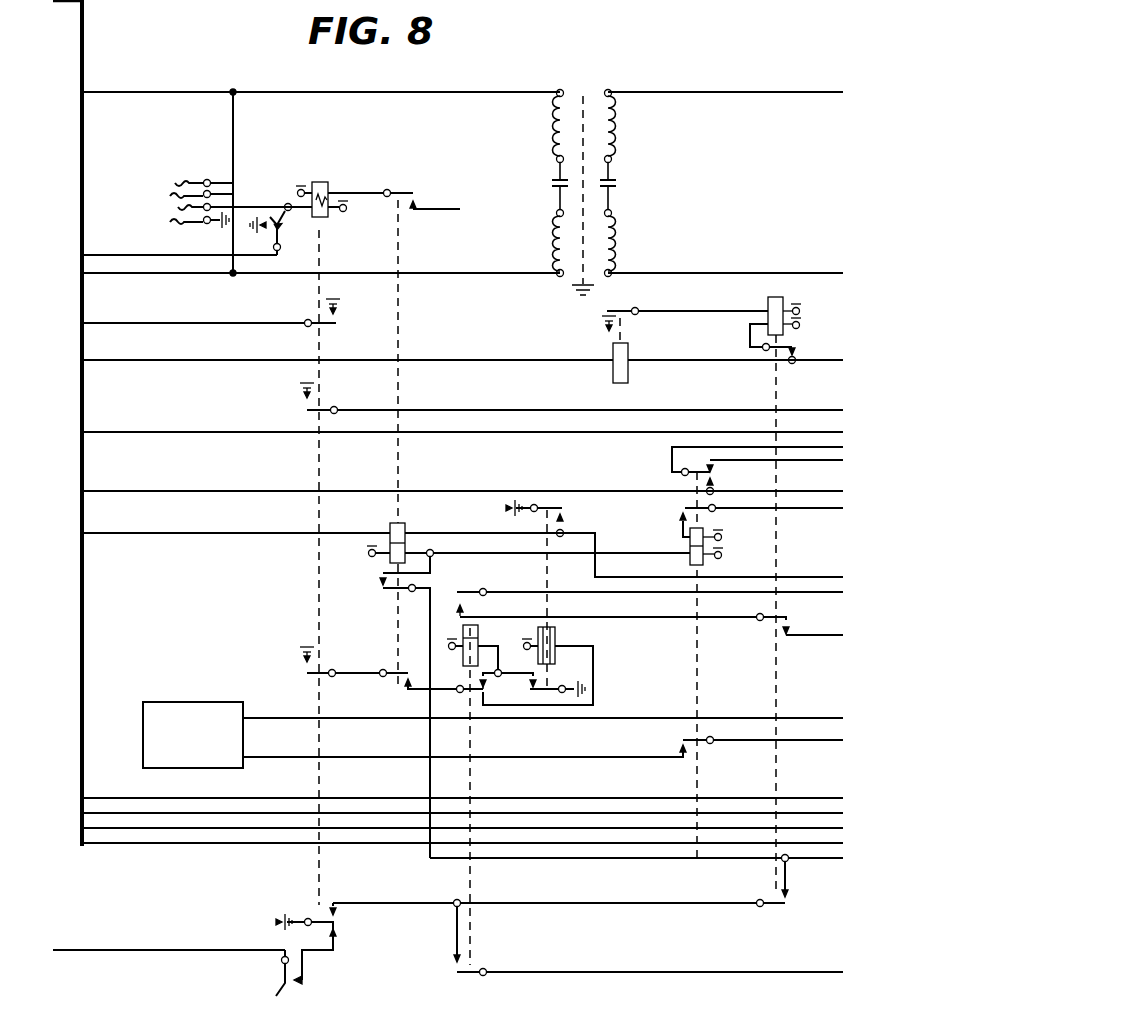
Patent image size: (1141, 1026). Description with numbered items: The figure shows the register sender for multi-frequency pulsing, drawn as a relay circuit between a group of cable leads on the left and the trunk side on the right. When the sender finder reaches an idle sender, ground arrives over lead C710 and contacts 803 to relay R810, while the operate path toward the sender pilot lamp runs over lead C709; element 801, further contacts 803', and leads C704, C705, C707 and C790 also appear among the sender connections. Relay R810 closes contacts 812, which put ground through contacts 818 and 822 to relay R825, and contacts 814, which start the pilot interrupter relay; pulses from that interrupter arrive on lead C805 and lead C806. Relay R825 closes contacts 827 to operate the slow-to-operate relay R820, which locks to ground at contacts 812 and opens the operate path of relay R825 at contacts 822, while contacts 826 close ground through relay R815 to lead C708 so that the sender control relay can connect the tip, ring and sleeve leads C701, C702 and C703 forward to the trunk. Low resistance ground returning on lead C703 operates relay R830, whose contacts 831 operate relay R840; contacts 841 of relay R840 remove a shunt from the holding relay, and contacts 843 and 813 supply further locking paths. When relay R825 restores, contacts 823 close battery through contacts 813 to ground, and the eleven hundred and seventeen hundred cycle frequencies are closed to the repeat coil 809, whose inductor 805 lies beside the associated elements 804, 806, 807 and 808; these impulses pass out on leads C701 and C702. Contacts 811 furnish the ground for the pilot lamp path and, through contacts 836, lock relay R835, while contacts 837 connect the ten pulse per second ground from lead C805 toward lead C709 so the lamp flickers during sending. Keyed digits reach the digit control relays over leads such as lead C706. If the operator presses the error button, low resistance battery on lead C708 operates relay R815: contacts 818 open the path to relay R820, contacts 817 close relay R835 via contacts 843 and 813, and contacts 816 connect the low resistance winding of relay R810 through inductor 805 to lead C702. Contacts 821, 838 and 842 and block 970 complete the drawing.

The line switch 801 is at (197, 172).
The contacts 803 is at (285, 230).
The relay contact 803' is at (305, 980).
The repeat coil winding 804 is at (553, 132).
The inductor 805 is at (553, 240).
The repeat coil winding 806 is at (617, 132).
The repeat coil winding 807 is at (617, 240).
The capacitor 808 is at (552, 185).
The repeat coil 809 is at (632, 183).
The relay R810 is at (319, 170).
The contacts 811 is at (318, 402).
The contacts 812 is at (304, 670).
The contacts 813 is at (340, 922).
The contacts 814 is at (340, 322).
The relay R815 is at (398, 523).
The contacts 816 is at (416, 202).
The contacts 817 is at (380, 584).
The contacts 818 is at (399, 680).
The relay R820 is at (472, 638).
The relay contact 821 is at (470, 600).
The contacts 822 is at (490, 683).
The contacts 823 is at (470, 970).
The relay R825 is at (556, 638).
The contacts 826 is at (566, 519).
The contacts 827 is at (540, 690).
The relay R830 is at (614, 348).
The contacts 831 is at (606, 312).
The relay R835 is at (712, 528).
The contacts 836 is at (682, 508).
The contacts 837 is at (714, 478).
The relay contact 838 is at (678, 741).
The relay R840 is at (768, 299).
The contacts 841 is at (792, 349).
The relay contact 842 is at (790, 622).
The contacts 843 is at (790, 905).
The control circuit 970 is at (493, 735).
The tip lead C701 is at (152, 90).
The ring lead C702 is at (152, 272).
The sleeve lead C703 is at (152, 358).
The cable conductor C704 is at (152, 796).
The cable conductor C705 is at (150, 812).
The lead C706 is at (150, 827).
The cable conductor C707 is at (150, 842).
The lead C708 is at (152, 531).
The lead C709 is at (152, 429).
The lead C710 is at (152, 253).
The cable conductor C790 is at (152, 948).
The lead C805 is at (152, 489).
The lead C806 is at (152, 321).